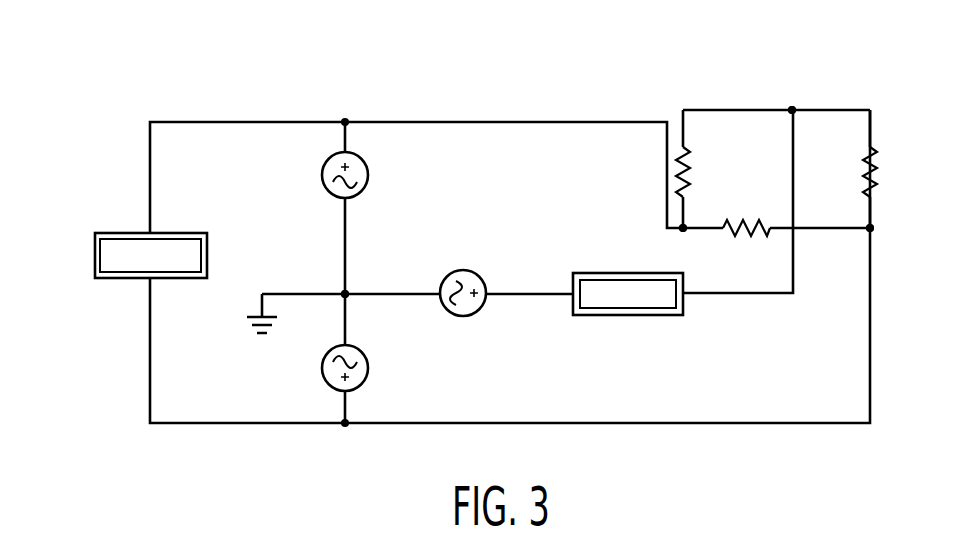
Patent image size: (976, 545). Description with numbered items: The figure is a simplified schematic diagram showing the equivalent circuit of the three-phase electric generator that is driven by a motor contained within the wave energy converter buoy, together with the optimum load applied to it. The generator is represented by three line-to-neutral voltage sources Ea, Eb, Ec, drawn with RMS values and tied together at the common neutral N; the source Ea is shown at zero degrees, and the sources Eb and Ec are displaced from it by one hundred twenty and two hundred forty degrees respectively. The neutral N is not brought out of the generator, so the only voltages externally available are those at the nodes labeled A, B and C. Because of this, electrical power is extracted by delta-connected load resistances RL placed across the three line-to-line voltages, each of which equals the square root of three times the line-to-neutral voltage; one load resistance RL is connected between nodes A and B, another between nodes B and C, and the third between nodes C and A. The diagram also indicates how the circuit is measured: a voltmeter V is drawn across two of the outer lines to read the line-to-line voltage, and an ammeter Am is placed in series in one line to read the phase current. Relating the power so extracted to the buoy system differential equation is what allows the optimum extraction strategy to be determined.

The node A is at (792, 106).
The node B is at (685, 225).
The node C is at (873, 231).
The neutral N is at (351, 280).
The delta connected load resistance RL is at (791, 191).
The phase A voltage source Ea is at (465, 266).
The phase B voltage source Eb is at (428, 168).
The phase C voltage source Ec is at (429, 370).
The line-to-line voltmeter V is at (206, 255).
The phase current ammeter Am is at (627, 279).